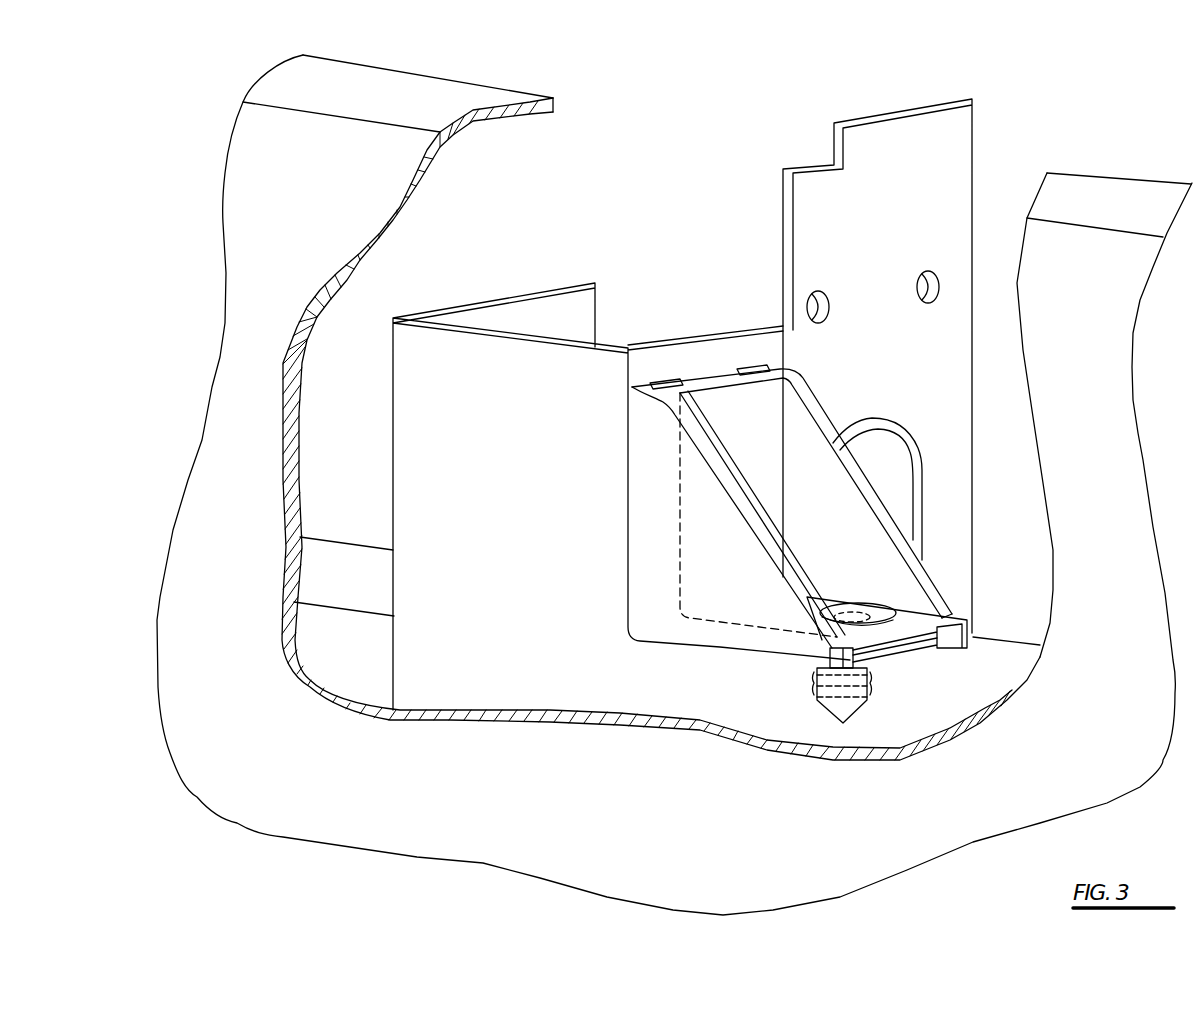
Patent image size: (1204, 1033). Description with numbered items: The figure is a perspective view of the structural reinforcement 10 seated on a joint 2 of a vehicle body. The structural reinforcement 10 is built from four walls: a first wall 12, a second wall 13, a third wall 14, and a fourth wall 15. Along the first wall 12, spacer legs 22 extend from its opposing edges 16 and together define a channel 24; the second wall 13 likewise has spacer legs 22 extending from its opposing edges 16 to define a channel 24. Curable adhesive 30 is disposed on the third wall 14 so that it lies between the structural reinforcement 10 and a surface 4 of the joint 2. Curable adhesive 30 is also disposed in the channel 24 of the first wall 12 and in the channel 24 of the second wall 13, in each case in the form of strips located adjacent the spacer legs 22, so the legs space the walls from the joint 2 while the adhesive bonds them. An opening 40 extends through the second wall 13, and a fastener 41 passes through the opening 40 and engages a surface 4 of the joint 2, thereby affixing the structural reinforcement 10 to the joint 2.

The joint 2 is at (658, 686).
The surface 4 is at (244, 488).
The structural reinforcement 10 is at (865, 368).
The first wall 12 is at (740, 428).
The second wall 13 is at (913, 615).
The third wall 14 is at (723, 460).
The fourth wall 15 is at (822, 488).
The opposing edges 16 is at (793, 452).
The spacer legs 22 is at (650, 385).
The channel 24 is at (713, 373).
The curable adhesive 30 is at (668, 382).
The opening 40 is at (848, 612).
The fastener 41 is at (843, 712).